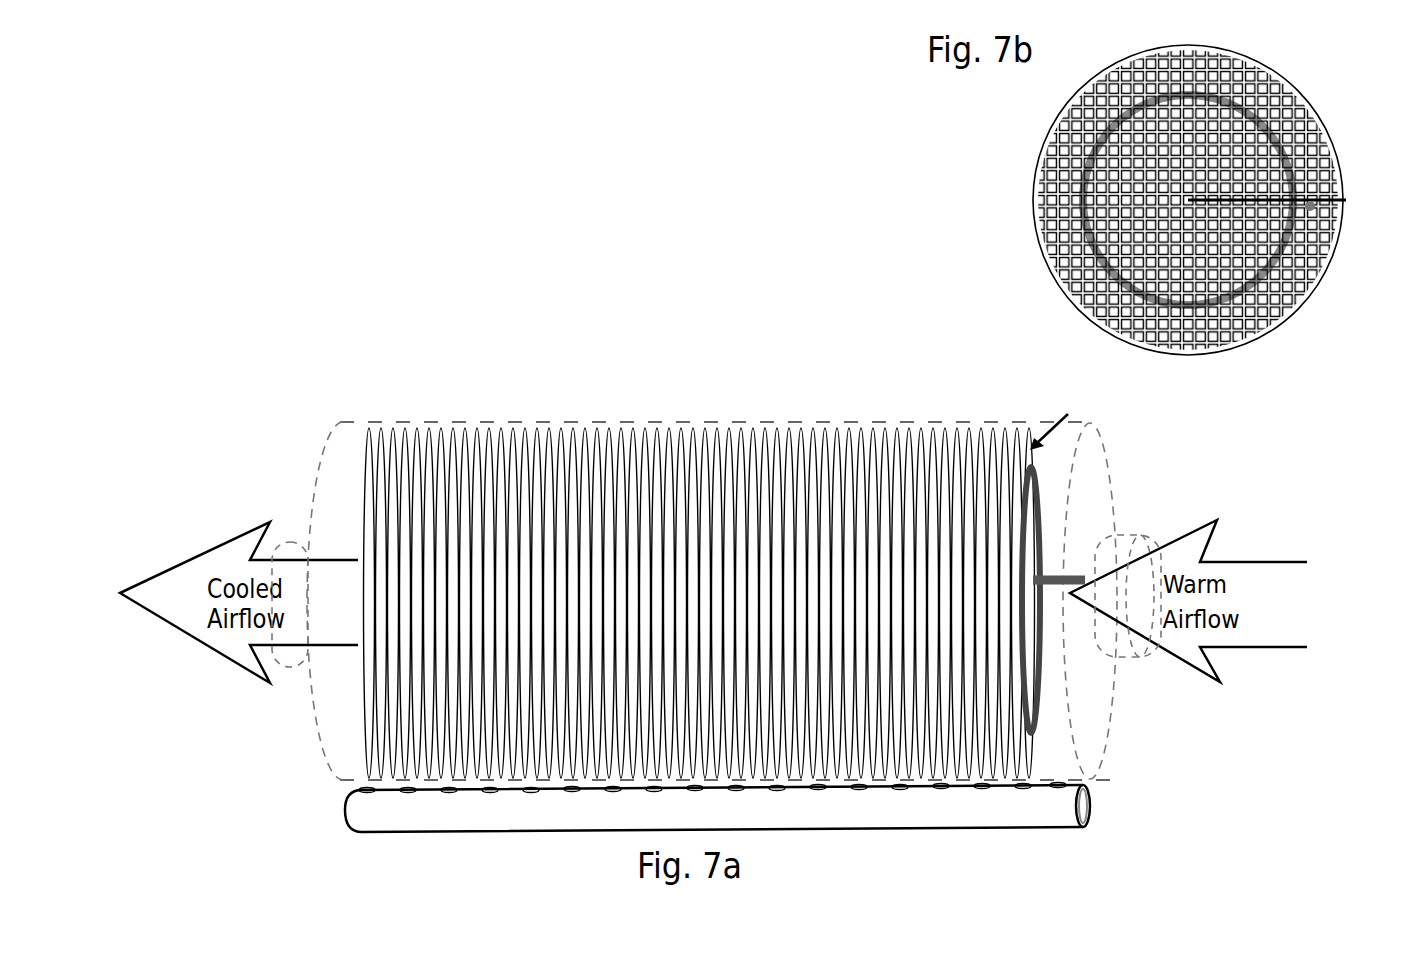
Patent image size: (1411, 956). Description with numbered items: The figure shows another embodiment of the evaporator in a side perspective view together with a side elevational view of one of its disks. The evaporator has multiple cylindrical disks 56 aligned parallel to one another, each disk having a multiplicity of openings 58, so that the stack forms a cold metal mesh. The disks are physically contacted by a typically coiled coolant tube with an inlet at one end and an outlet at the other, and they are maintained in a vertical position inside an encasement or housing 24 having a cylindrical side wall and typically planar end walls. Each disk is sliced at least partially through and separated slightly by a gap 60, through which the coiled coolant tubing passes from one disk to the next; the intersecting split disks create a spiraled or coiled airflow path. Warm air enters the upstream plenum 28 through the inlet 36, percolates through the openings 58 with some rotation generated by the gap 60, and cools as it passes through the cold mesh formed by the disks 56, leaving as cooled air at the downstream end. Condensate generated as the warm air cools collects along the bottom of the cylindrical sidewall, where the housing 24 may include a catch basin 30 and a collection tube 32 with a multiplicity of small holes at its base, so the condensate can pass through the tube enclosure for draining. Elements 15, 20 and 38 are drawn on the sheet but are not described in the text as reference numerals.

In FIG. 7A, the heat exchanger housing 15 is at (1044, 295).
In FIG. 7A, the metal mesh split disc 20 is at (1302, 223).
In FIG. 7B, the metal mesh split disc 20 is at (1213, 100).
In FIG. 7A, the housing or encasement 24 is at (757, 423).
In FIG. 7A, the upstream plenum 28 is at (1107, 715).
In FIG. 7A, the catch basin 30 is at (338, 465).
In FIG. 7A, the collection tube 32 is at (1045, 807).
In FIG. 7A, the inlet 36 is at (1127, 645).
In FIG. 7A, the cooled airflow port 38 is at (287, 543).
In FIG. 7B, the cylindrical disks 56 is at (1293, 143).
In FIG. 7B, the openings 58 is at (1088, 278).
In FIG. 7A, the gap 60 is at (1043, 565).
In FIG. 7B, the gap 60 is at (1353, 200).